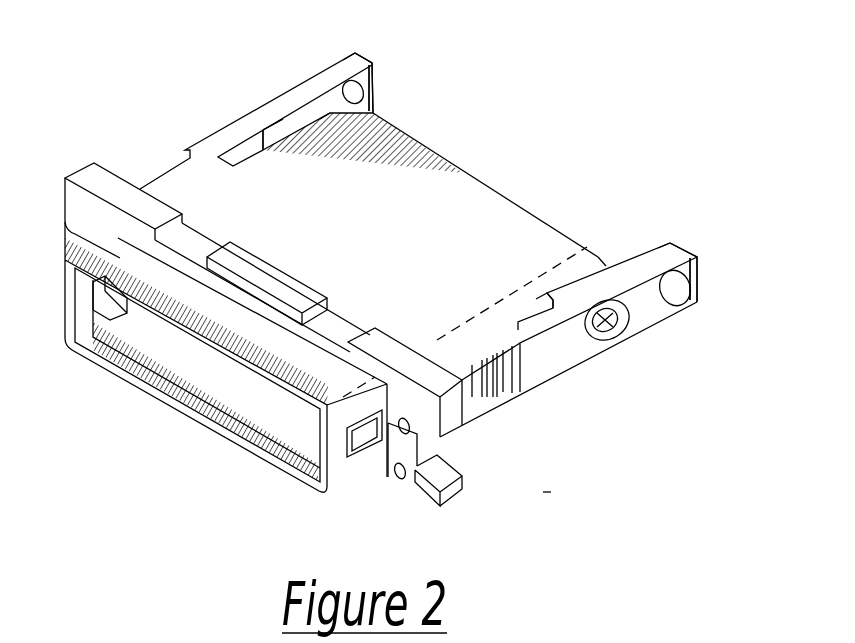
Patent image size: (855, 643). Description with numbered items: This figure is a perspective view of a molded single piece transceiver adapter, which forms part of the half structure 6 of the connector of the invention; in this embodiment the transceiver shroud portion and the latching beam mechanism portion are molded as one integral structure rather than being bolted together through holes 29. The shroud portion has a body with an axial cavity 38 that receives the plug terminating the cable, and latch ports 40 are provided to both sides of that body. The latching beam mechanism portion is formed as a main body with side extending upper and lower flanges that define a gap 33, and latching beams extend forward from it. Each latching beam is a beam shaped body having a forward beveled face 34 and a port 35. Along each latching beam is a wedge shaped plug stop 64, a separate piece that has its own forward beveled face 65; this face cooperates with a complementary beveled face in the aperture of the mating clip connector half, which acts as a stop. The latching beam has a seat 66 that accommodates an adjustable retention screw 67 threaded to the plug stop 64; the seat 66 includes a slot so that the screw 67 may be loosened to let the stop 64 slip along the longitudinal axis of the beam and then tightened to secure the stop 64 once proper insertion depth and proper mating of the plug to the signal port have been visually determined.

The half structure 6 is at (482, 211).
The holes 29 is at (399, 479).
The gap 33 is at (423, 453).
The forward beveled face 34 is at (373, 66).
The port 35 is at (362, 98).
The axial cavity 38 is at (213, 380).
The latch ports 40 is at (112, 318).
The wedge shaped plug stop 64 is at (312, 124).
The forward beveled face 65 is at (342, 100).
The seat 66 is at (618, 305).
The retention screw 67 is at (606, 328).